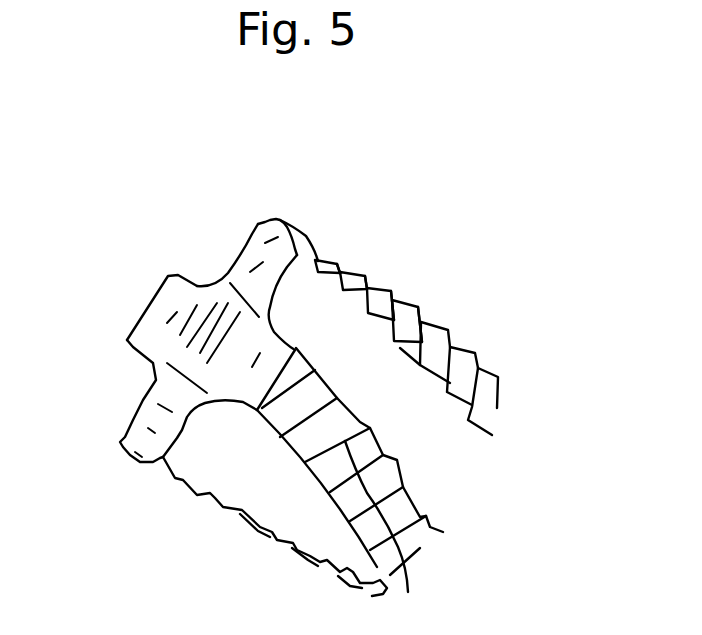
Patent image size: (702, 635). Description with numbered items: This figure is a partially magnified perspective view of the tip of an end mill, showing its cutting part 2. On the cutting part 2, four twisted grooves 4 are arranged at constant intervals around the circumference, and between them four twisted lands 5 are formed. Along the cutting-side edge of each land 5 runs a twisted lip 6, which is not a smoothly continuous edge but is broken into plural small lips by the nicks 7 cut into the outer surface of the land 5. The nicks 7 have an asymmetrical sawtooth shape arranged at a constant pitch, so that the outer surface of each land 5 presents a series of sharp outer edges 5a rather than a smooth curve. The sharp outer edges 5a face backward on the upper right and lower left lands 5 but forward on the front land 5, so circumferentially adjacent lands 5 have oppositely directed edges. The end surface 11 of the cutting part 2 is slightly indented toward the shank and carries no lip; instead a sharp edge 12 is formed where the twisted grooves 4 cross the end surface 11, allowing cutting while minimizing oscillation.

The cutting part 2 is at (548, 457).
The twisted groove 4 is at (212, 262).
The twisted land 5 is at (152, 307).
The sharp outer edge 5a is at (395, 297).
The twisted lip 6 is at (407, 303).
The nick 7 is at (377, 285).
The end surface 11 is at (200, 300).
The sharp edge 12 is at (253, 229).